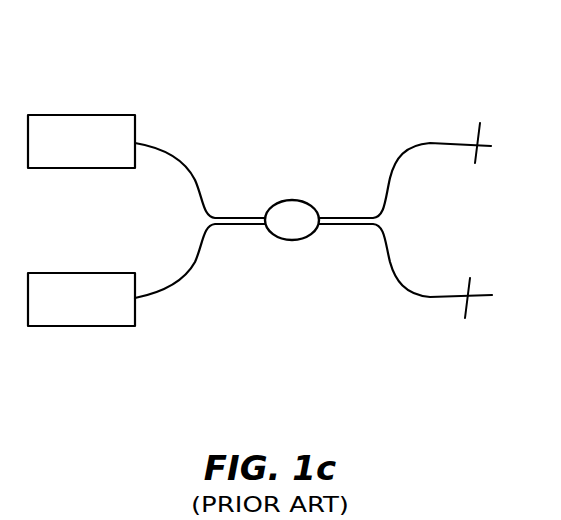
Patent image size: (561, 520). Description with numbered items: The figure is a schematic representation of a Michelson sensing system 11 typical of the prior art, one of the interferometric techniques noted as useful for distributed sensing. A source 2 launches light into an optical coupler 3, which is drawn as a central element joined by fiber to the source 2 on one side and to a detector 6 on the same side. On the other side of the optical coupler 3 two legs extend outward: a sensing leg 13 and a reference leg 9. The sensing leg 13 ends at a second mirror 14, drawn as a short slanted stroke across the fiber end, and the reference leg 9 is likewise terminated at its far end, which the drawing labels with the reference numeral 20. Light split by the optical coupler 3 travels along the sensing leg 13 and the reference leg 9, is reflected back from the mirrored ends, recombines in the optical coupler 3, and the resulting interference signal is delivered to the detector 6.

The Michelson sensing system 11 is at (253, 83).
The detector 6 is at (52, 115).
The source 2 is at (50, 326).
The optical coupler 3 is at (292, 240).
The sensing leg 13 is at (418, 146).
The second mirror 14 is at (482, 135).
The reference leg 9 is at (400, 285).
The second fiber end 20 is at (468, 300).